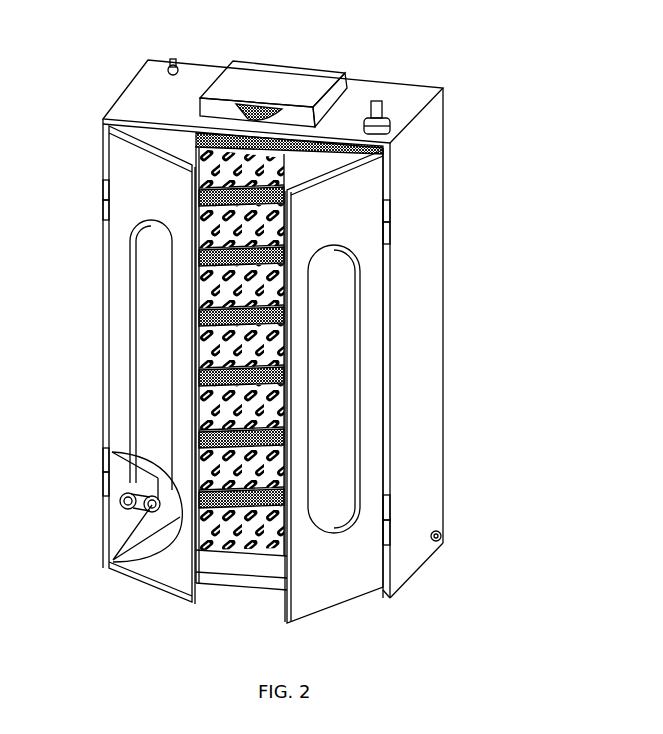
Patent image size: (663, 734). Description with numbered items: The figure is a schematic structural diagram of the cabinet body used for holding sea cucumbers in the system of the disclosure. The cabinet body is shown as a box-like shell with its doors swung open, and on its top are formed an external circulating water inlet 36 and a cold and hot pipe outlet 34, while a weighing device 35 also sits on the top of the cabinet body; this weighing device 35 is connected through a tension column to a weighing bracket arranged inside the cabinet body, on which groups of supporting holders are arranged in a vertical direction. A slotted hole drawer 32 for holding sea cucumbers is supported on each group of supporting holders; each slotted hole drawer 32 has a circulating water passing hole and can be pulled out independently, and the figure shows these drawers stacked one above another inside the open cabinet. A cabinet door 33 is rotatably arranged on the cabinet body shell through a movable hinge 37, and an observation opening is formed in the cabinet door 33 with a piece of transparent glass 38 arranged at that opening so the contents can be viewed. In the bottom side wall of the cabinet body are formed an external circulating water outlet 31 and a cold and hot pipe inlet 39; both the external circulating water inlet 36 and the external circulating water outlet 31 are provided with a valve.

The external circulating water outlet 31 is at (135, 495).
The slotted hole drawer 32 is at (197, 365).
The cabinet door 33 is at (160, 212).
The cold and hot pipe outlet 34 is at (172, 62).
The weighing device 35 is at (262, 106).
The external circulating water inlet 36 is at (378, 105).
The movable hinge 37 is at (386, 214).
The transparent glass 38 is at (330, 420).
The cold and hot pipe inlet 39 is at (438, 530).